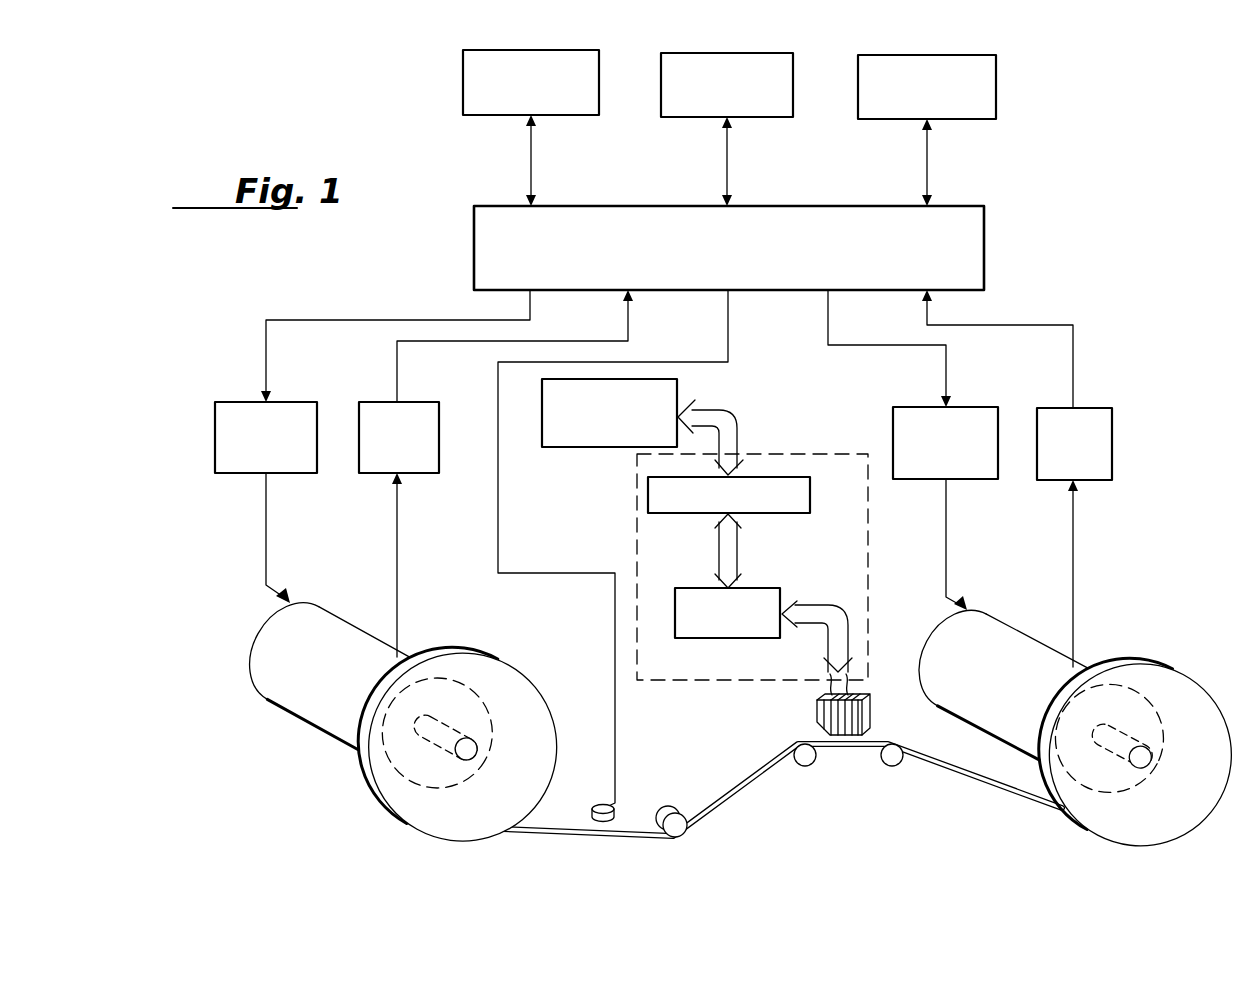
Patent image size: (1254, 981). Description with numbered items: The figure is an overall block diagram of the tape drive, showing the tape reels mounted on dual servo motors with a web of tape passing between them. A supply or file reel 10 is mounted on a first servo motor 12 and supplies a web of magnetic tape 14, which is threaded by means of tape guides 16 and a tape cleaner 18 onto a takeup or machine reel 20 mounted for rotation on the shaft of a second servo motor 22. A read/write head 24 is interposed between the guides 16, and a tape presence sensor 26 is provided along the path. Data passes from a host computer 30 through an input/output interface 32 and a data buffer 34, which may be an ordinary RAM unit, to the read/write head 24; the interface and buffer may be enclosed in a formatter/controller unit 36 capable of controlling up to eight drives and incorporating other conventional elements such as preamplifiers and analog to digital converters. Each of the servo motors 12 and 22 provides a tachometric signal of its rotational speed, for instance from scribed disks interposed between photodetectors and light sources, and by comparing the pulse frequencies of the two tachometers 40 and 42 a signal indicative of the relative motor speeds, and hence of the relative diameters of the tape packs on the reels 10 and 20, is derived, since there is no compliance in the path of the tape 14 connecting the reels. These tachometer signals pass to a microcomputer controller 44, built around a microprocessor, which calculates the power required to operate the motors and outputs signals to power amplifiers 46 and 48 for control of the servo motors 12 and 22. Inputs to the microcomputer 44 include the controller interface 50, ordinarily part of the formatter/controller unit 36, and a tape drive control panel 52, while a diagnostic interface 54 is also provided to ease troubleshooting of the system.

The supply reel 10 is at (412, 797).
The first servo motor 12 is at (275, 637).
The web of magnetic tape 14 is at (632, 828).
The tape guides 16 is at (887, 756).
The tape cleaner 18 is at (680, 814).
The takeup reel 20 is at (1190, 712).
The second servo motor 22 is at (996, 633).
The read/write head 24 is at (827, 716).
The tape presence sensor 26 is at (601, 806).
The host computer 30 is at (553, 436).
The input/output interface 32 is at (803, 502).
The data buffer 34 is at (763, 593).
The formatter/controller unit 36 is at (633, 506).
The tachometer 40 is at (368, 426).
The tachometer 42 is at (1106, 420).
The microcomputer controller 44 is at (968, 258).
The power amplifier 46 is at (225, 437).
The power amplifier 48 is at (893, 432).
The controller interface 50 is at (480, 106).
The tape drive control panel 52 is at (781, 118).
The diagnostic interface 54 is at (990, 112).